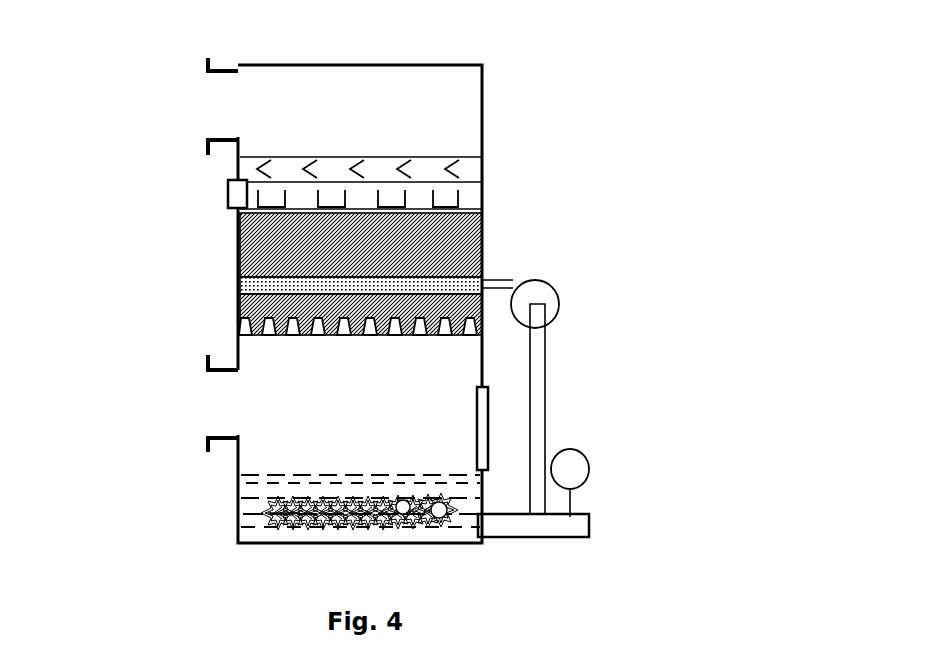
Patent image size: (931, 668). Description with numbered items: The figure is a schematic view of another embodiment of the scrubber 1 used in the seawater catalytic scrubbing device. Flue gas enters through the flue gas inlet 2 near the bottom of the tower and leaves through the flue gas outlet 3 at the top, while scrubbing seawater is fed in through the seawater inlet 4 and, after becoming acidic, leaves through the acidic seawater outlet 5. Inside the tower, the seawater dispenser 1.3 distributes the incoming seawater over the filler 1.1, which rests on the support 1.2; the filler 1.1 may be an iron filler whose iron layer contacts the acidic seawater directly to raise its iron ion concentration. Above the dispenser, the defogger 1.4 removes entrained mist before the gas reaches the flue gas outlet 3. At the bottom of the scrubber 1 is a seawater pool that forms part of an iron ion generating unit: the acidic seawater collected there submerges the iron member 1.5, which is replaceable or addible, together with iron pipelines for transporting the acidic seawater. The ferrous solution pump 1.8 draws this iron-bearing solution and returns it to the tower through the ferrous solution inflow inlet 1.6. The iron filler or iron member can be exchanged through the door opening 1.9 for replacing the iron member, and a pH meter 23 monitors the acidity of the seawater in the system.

The scrubber 1 is at (377, 65).
The flue gas inlet of the scrubber 2 is at (218, 407).
The flue gas outlet of the scrubber 3 is at (216, 107).
The seawater inlet of the scrubber 4 is at (230, 193).
The acidic seawater outlet of the scrubber 5 is at (573, 524).
The pH meter 23 is at (580, 457).
The filler 1.1 is at (265, 258).
The support 1.2 is at (240, 322).
The seawater dispenser 1.3 is at (477, 197).
The defogger 1.4 is at (472, 165).
The iron member 1.5 is at (415, 525).
The ferrous solution inflow inlet 1.6 is at (463, 286).
The ferrous solution pump 1.8 is at (531, 295).
The door opening for replacing iron member 1.9 is at (492, 433).